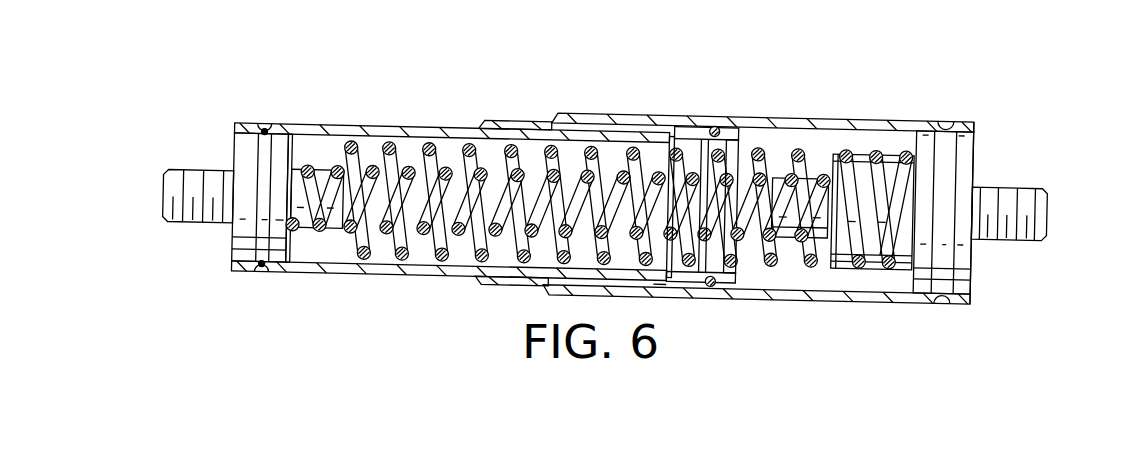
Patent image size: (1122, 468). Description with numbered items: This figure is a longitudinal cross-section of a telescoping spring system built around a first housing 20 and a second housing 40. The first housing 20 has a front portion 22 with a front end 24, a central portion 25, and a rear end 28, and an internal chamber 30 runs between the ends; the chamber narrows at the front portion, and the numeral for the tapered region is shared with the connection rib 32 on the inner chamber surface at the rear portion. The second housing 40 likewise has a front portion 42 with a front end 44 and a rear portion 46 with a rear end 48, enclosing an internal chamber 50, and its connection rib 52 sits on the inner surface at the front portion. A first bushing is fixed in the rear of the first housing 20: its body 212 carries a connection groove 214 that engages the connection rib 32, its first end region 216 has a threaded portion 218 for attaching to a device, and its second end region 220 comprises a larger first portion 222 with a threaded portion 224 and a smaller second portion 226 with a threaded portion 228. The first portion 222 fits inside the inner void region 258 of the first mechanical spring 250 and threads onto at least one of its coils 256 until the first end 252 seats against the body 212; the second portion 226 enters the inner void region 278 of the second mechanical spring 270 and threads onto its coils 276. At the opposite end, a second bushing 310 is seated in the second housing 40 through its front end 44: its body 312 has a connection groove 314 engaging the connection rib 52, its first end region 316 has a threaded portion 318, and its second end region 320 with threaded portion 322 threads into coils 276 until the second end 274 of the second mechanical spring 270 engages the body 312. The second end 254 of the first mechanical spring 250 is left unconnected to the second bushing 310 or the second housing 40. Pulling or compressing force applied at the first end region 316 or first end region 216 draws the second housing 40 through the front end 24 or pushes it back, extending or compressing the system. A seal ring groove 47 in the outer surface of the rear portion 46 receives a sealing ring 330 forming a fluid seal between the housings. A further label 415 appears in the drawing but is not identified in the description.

The first housing 20 is at (766, 108).
The front portion 22 is at (506, 128).
The front end 24 is at (473, 126).
The central portion 25 is at (839, 104).
The rear end 28 is at (974, 122).
The internal chamber 30 is at (601, 86).
The connection rib 32 is at (549, 114).
The second housing 40 is at (412, 131).
The front portion 42 is at (281, 130).
The front end 44 is at (237, 135).
The rear portion 46 is at (712, 122).
The seal ring groove 47 is at (700, 288).
The rear end 48 is at (738, 132).
The internal chamber 50 is at (386, 266).
The connection rib 52 is at (262, 128).
The body 212 is at (966, 253).
The connection groove 214 is at (937, 284).
The first end region 216 is at (996, 180).
The threaded portion 218 is at (1043, 180).
The second end region 220 is at (851, 146).
The first portion 222 is at (830, 265).
The threaded portion 224 is at (862, 270).
The second portion 226 is at (788, 262).
The threaded portion 228 is at (800, 172).
The first mechanical spring 250 is at (481, 262).
The first end 252 is at (906, 146).
The second end 254 is at (342, 131).
The coils 256 is at (684, 125).
The inner void region 258 is at (666, 150).
The second mechanical spring 270 is at (580, 245).
The second end 274 is at (290, 277).
The coils 276 is at (373, 176).
The inner void region 278 is at (449, 249).
The second bushing 310 is at (228, 258).
The body 312 is at (245, 283).
The connection groove 314 is at (266, 286).
The first end region 316 is at (195, 178).
The threaded portion 318 is at (162, 238).
The second end region 320 is at (333, 266).
The threaded portion 322 is at (323, 176).
The sealing ring 330 is at (725, 290).
The spring end 415 is at (350, 131).